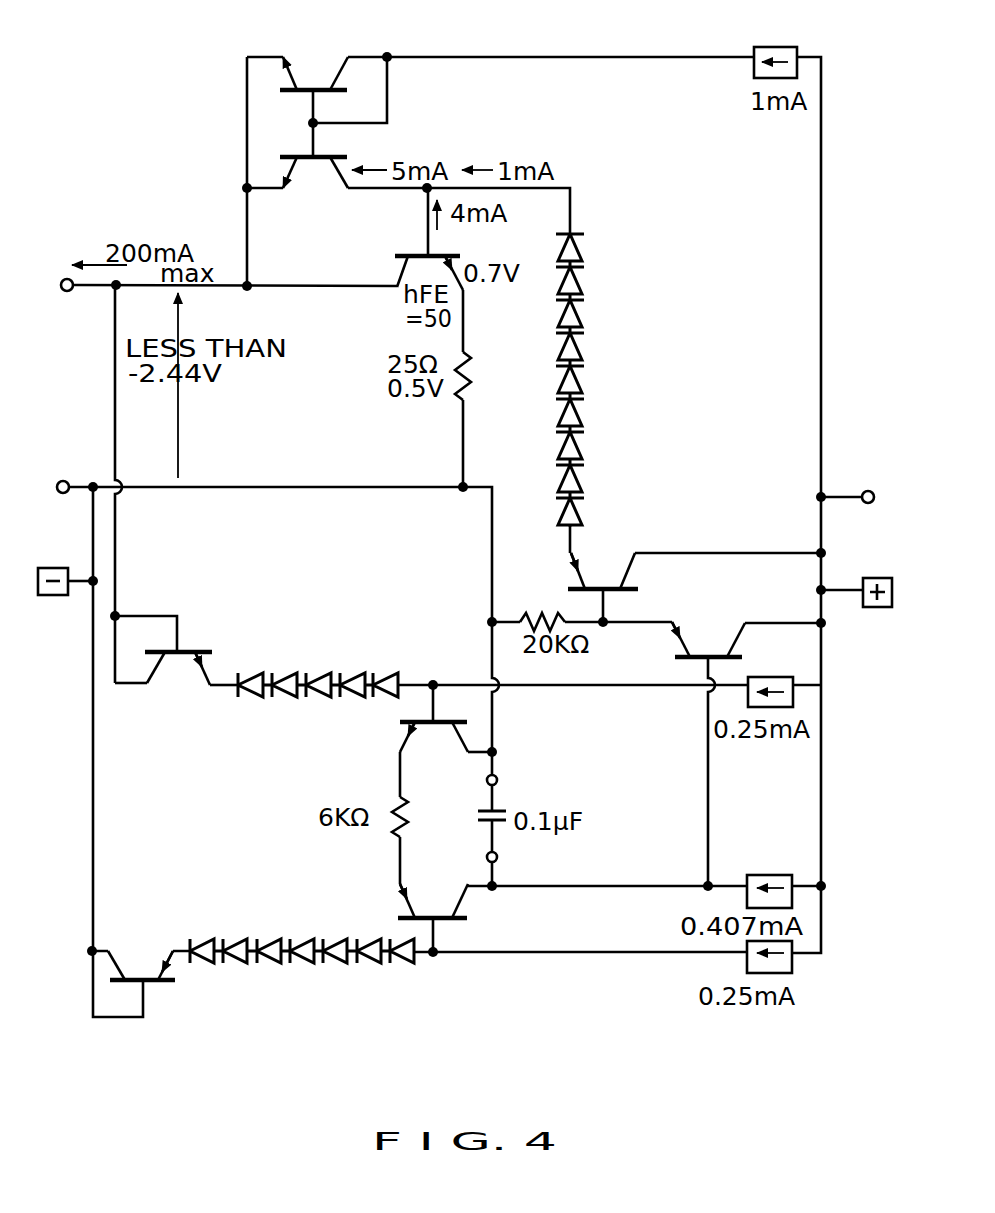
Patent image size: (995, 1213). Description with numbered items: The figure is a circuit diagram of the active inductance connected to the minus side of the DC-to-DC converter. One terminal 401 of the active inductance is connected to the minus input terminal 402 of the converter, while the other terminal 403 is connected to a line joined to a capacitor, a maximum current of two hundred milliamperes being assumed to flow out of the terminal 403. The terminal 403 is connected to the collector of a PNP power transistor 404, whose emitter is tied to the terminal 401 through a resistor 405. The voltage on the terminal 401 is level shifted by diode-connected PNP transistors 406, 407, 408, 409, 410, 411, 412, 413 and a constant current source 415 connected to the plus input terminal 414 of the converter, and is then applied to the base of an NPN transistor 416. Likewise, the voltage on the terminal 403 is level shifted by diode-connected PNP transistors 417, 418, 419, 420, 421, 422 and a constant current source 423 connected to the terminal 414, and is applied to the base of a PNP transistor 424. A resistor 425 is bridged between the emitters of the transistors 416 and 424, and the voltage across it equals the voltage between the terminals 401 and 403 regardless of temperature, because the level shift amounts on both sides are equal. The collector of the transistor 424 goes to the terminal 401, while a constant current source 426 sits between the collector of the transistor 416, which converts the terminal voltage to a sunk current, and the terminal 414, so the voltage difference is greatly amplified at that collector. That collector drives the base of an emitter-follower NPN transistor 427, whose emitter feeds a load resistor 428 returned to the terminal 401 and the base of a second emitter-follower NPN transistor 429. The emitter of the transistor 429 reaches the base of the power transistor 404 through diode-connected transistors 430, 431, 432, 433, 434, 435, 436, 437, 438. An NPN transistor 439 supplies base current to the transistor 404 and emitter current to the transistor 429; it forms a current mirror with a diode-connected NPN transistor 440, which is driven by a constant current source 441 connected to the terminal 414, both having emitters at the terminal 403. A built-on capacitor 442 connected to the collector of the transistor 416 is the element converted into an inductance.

The terminal 401 is at (62, 481).
The minus input terminal 402 is at (53, 566).
The terminal 403 is at (62, 293).
The PNP power transistor 404 is at (400, 262).
The resistor 405 is at (469, 372).
The diode-connected PNP transistor 406 is at (140, 968).
The diode-connected PNP transistor 407 is at (200, 966).
The diode-connected PNP transistor 408 is at (230, 938).
The diode-connected PNP transistor 409 is at (265, 966).
The diode-connected PNP transistor 410 is at (295, 938).
The diode-connected PNP transistor 411 is at (330, 966).
The diode-connected PNP transistor 412 is at (360, 938).
The diode-connected PNP transistor 413 is at (400, 966).
The plus input terminal 414 is at (875, 611).
The constant current source 415 is at (793, 962).
The NPN transistor 416 is at (436, 904).
The diode-connected PNP transistor 417 is at (179, 658).
The diode-connected PNP transistor 418 is at (243, 673).
The diode-connected PNP transistor 419 is at (281, 700).
The diode-connected PNP transistor 420 is at (310, 673).
The diode-connected PNP transistor 421 is at (349, 700).
The diode-connected PNP transistor 422 is at (380, 673).
The constant current source 423 is at (772, 676).
The PNP transistor 424 is at (432, 727).
The resistor 425 is at (409, 806).
The constant current source 426 is at (772, 874).
The NPN transistor 427 is at (706, 640).
The load resistor 428 is at (543, 618).
The NPN transistor 429 is at (612, 568).
The diode-connected transistor 430 is at (586, 511).
The diode-connected transistor 431 is at (586, 478).
The diode-connected transistor 432 is at (586, 445).
The diode-connected transistor 433 is at (586, 412).
The diode-connected transistor 434 is at (586, 379).
The diode-connected transistor 435 is at (586, 346).
The diode-connected transistor 436 is at (586, 313).
The diode-connected transistor 437 is at (586, 280).
The diode-connected transistor 438 is at (586, 247).
The NPN transistor 439 is at (311, 162).
The diode-connected NPN transistor 440 is at (310, 76).
The constant current source 441 is at (777, 46).
The capacitor 442 is at (506, 808).